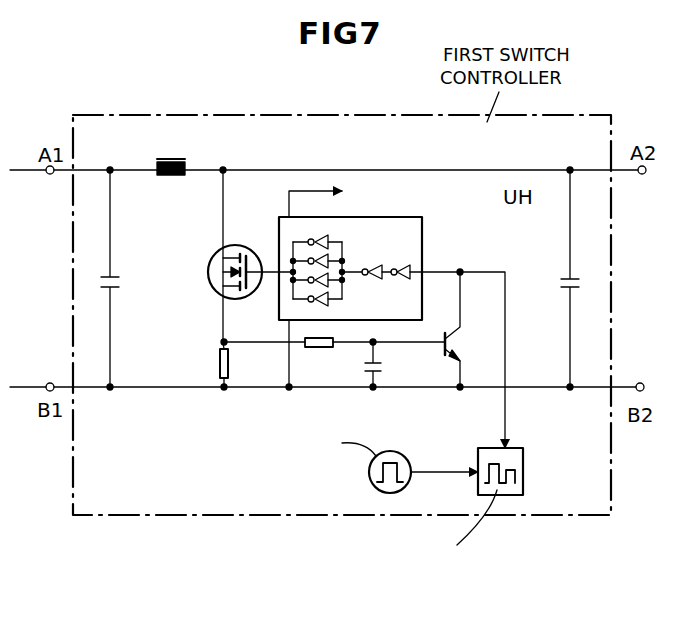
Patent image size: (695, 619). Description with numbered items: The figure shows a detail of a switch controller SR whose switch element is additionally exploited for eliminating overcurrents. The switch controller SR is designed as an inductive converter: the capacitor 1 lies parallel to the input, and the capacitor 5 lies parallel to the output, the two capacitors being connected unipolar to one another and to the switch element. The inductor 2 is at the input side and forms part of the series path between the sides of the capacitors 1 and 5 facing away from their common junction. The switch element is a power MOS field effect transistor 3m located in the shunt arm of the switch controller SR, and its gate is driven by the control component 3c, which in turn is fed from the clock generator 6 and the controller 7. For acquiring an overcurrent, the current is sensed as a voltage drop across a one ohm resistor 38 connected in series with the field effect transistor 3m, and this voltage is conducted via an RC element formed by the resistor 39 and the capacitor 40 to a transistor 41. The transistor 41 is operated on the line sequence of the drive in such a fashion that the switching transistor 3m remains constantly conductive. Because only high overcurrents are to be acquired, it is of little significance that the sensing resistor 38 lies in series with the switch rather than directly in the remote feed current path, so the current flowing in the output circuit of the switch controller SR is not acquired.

The switch controller SR is at (387, 128).
The capacitor 1 is at (119, 283).
The inductor 2 is at (177, 141).
The field effect transistor 3m is at (230, 248).
The control component 3c is at (422, 232).
The capacitor 5 is at (567, 278).
The clock generator 6 is at (399, 431).
The controller 7 is at (531, 426).
The resistor 38 is at (239, 364).
The resistor of RC element 39 is at (334, 357).
The capacitor of RC element 40 is at (389, 364).
The transistor 41 is at (466, 331).